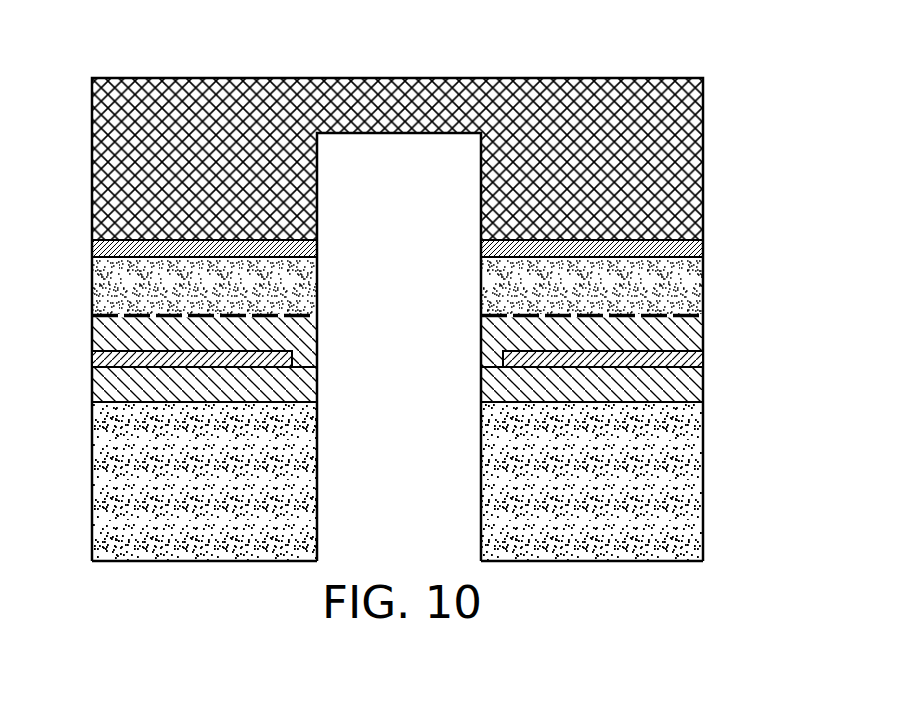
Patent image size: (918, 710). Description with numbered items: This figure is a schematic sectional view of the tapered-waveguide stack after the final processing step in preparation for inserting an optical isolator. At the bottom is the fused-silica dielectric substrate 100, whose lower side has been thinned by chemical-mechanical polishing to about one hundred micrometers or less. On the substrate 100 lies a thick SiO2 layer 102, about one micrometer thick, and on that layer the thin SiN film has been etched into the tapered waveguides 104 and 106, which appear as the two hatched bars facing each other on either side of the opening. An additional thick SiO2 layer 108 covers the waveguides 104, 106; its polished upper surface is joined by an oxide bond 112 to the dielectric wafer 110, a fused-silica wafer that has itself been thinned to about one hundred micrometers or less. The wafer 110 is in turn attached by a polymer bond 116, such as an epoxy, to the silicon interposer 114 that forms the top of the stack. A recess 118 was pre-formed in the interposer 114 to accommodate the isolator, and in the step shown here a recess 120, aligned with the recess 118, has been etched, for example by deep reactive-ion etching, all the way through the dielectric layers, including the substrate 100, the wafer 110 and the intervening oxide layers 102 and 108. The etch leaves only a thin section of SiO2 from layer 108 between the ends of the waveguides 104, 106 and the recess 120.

The dielectric substrate 100 is at (703, 508).
The SiO2 layer 102 is at (693, 382).
The tapered waveguide 104 is at (102, 358).
The tapered waveguide 106 is at (700, 358).
The SiO2 layer 108 is at (697, 327).
The dielectric wafer 110 is at (697, 267).
The oxide bond 112 is at (102, 313).
The interposer 114 is at (695, 132).
The polymer bond 116 is at (698, 246).
The recess 118 is at (416, 178).
The recess 120 is at (416, 491).